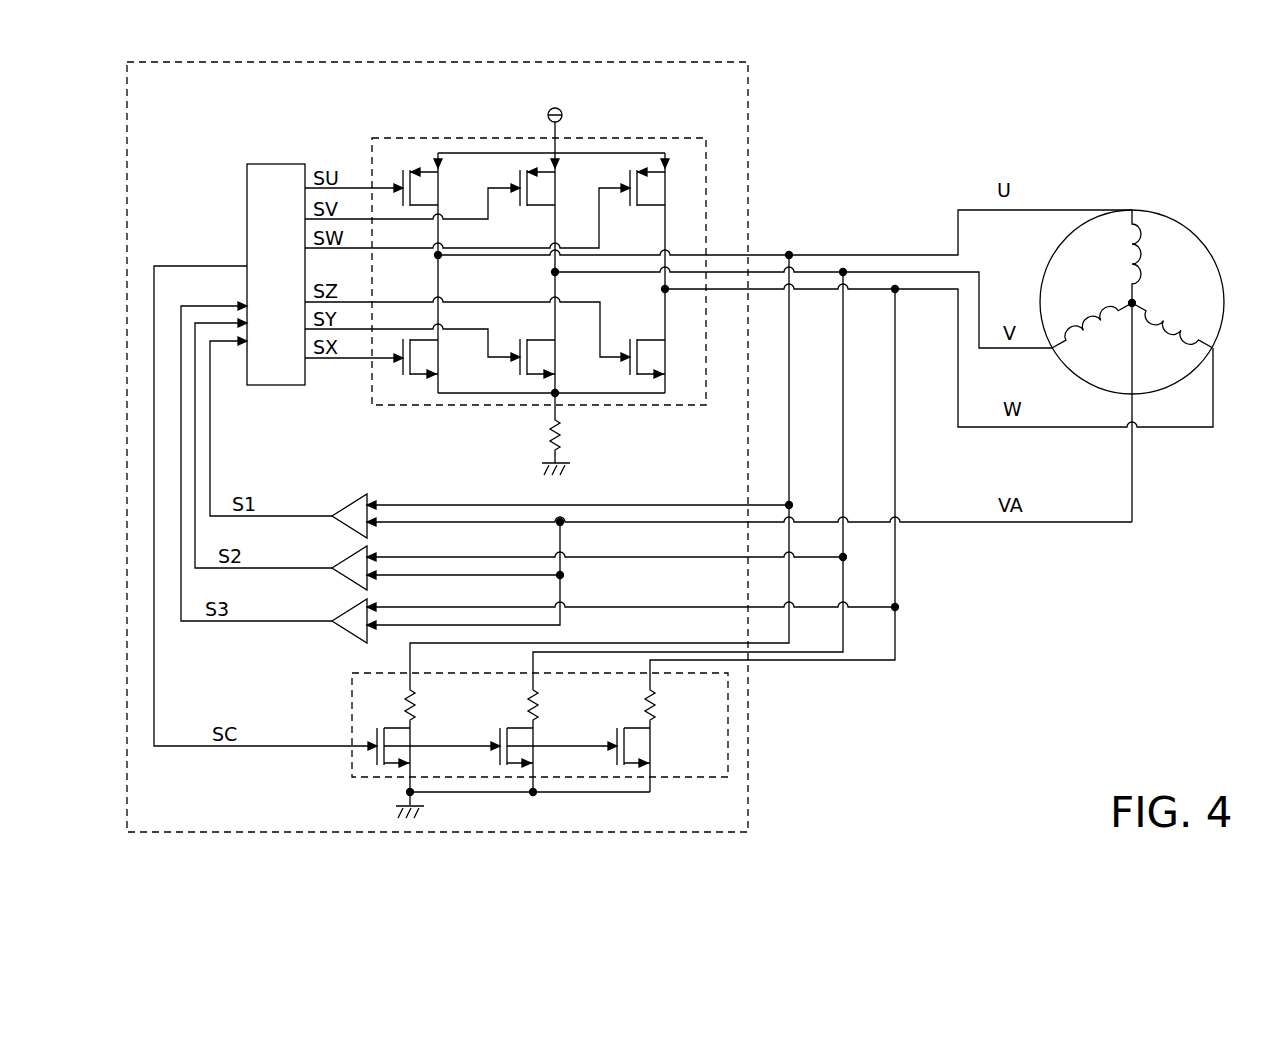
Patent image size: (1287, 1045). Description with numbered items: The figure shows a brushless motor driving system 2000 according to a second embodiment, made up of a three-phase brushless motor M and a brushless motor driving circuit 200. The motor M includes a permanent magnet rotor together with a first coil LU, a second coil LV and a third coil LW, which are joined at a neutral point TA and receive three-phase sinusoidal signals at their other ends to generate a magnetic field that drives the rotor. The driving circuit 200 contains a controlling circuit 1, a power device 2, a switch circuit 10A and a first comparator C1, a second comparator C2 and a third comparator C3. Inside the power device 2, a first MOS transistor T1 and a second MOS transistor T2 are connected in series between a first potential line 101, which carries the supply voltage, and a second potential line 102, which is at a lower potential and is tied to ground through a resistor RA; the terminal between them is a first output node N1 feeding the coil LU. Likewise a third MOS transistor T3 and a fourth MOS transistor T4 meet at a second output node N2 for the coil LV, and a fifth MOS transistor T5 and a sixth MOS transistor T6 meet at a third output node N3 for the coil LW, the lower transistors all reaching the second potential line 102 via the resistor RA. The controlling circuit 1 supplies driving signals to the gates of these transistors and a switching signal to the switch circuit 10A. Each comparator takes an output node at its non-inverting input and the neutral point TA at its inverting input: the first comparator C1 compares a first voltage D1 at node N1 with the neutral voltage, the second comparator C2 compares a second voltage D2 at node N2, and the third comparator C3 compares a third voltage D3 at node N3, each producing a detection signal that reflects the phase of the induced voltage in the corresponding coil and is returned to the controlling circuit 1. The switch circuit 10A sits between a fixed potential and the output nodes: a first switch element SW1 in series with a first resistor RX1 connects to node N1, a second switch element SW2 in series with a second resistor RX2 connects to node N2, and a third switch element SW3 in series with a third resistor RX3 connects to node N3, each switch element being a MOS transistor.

The controlling circuit 1 is at (272, 164).
The power device 2 is at (462, 138).
The first potential line 101 is at (556, 108).
The second potential line 102 is at (539, 475).
The brushless motor driving circuit 200 is at (749, 100).
The switch circuit 10A is at (351, 692).
The brushless motor driving system 2000 is at (988, 792).
The first MOS transistor T1 is at (425, 182).
The second MOS transistor T2 is at (425, 358).
The third MOS transistor T3 is at (542, 182).
The fourth MOS transistor T4 is at (542, 358).
The fifth MOS transistor T5 is at (652, 182).
The sixth MOS transistor T6 is at (652, 358).
The first output node N1 is at (436, 257).
The second output node N2 is at (554, 274).
The third output node N3 is at (663, 291).
The first voltage D1 is at (615, 471).
The second voltage D2 is at (703, 480).
The third voltage D3 is at (789, 488).
The first comparator C1 is at (342, 504).
The second comparator C2 is at (342, 556).
The third comparator C3 is at (342, 609).
The resistor RA is at (573, 428).
The first resistor RX1 is at (434, 709).
The second resistor RX2 is at (557, 709).
The third resistor RX3 is at (674, 709).
The first switch element SW1 is at (419, 760).
The second switch element SW2 is at (484, 760).
The third switch element SW3 is at (596, 760).
The three-phase brushless motor M is at (1172, 219).
The first coil LU is at (1118, 256).
The second coil LV is at (1090, 322).
The third coil LW is at (1170, 328).
The neutral point TA is at (1133, 304).